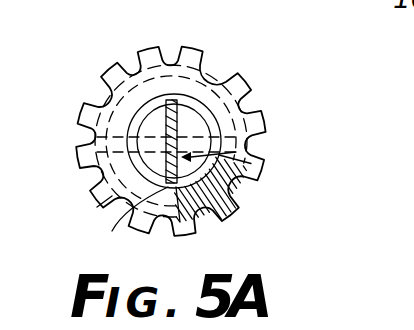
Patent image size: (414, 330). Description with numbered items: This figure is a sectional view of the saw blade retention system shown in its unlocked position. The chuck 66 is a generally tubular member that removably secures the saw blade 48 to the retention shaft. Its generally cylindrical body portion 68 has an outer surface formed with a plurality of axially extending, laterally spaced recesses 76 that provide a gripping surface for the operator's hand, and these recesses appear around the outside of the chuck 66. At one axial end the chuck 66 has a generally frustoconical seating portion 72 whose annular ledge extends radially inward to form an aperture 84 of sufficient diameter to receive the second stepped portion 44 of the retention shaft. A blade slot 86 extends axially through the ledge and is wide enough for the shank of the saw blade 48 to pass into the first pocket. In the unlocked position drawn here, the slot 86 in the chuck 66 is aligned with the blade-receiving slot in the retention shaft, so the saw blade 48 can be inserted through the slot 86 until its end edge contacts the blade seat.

The chuck 66 is at (204, 35).
The recesses 76 is at (221, 72).
The body portion 68 is at (75, 168).
The aperture 84 is at (148, 118).
The second stepped portion 44 is at (198, 127).
The saw blade 48 is at (262, 172).
The seating portion 72 is at (97, 207).
The blade slot 86 is at (124, 226).